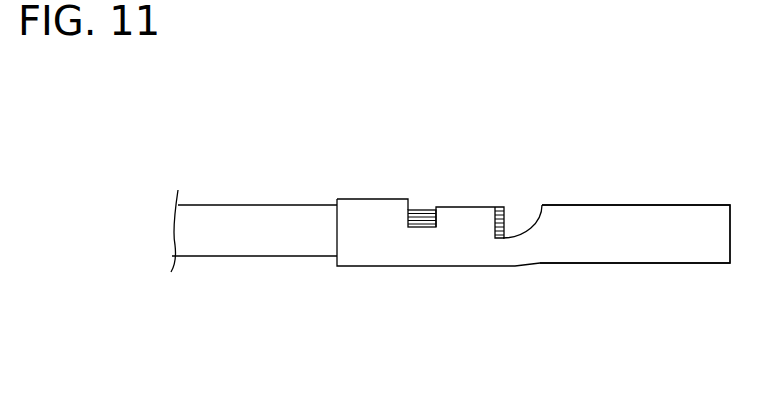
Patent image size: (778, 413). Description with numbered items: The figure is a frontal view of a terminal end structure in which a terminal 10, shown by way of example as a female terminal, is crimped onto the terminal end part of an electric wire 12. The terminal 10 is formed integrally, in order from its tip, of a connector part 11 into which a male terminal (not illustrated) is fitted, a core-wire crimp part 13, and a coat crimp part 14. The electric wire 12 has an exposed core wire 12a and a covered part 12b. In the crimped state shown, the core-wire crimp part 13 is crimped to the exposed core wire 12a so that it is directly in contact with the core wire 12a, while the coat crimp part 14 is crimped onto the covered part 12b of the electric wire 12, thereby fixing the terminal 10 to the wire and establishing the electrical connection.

The terminal 10 is at (557, 282).
The connector part 11 is at (664, 216).
The electric wire 12 is at (236, 192).
The exposed core wire 12a is at (423, 212).
The covered part 12b is at (277, 240).
The core-wire crimp part 13 is at (473, 212).
The coat crimp part 14 is at (375, 207).